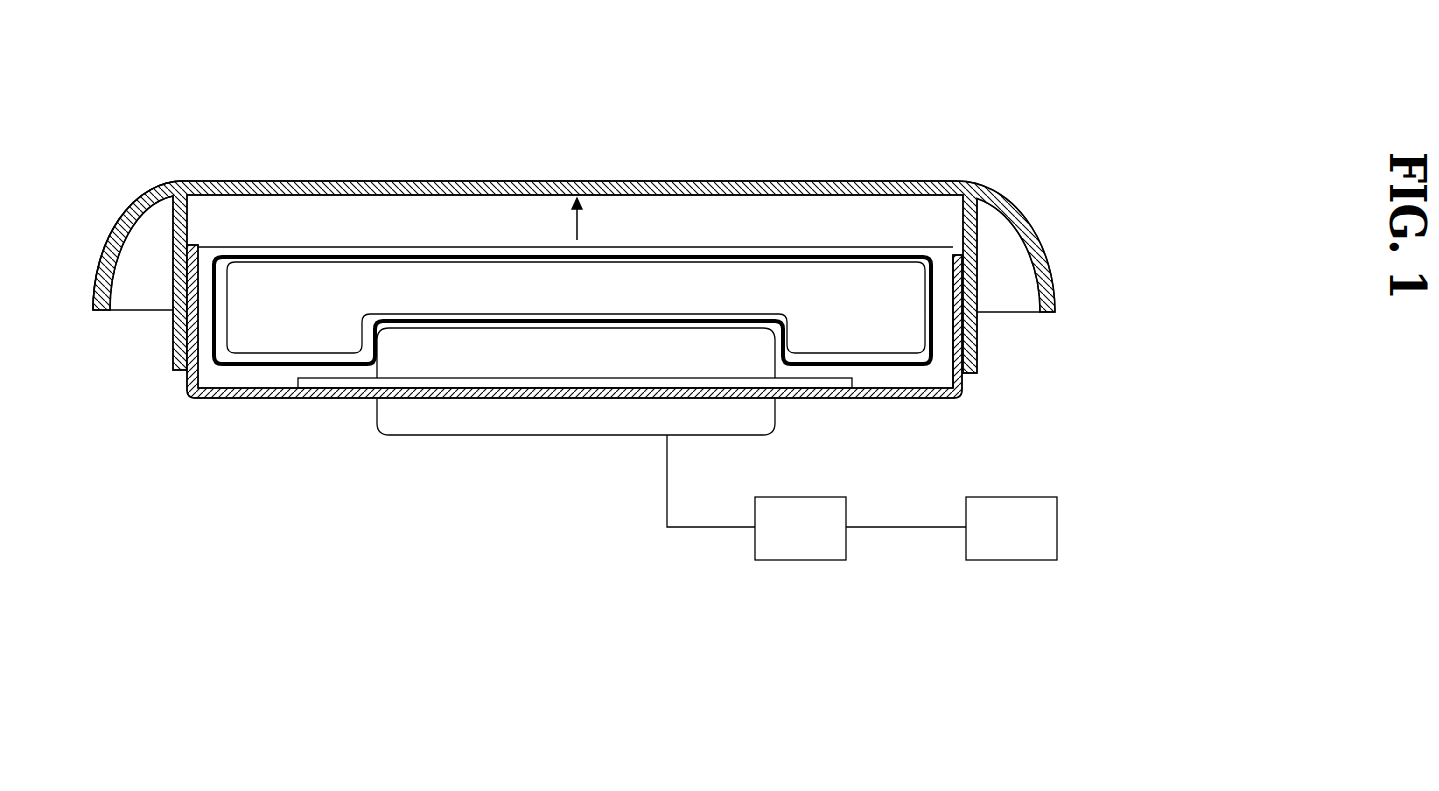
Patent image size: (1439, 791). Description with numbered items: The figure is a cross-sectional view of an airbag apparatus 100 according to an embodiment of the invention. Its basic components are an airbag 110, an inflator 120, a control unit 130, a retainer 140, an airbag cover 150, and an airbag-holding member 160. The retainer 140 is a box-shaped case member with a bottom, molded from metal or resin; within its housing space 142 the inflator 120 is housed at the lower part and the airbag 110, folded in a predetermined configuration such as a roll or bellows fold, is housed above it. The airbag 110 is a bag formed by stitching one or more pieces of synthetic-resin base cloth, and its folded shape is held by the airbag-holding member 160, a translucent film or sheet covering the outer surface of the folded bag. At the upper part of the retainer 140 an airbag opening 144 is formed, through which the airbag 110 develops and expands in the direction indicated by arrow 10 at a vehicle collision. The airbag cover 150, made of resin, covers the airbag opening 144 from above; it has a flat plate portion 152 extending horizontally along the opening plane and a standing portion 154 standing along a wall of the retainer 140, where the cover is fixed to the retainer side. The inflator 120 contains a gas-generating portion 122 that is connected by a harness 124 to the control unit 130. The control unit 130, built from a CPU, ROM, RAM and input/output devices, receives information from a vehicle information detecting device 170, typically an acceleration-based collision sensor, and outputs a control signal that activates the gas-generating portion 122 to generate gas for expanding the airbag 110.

The airbag apparatus 100 is at (637, 113).
The arrow 10 is at (597, 219).
The airbag 110 is at (448, 285).
The inflator 120 is at (529, 416).
The gas-generating portion 122 is at (375, 417).
The harness 124 is at (695, 532).
The control unit 130 is at (800, 560).
The retainer 140 is at (245, 398).
The housing space 142 is at (945, 333).
The airbag opening 144 is at (735, 249).
The airbag cover 150 is at (373, 181).
The flat plate portion 152 is at (260, 181).
The standing portion 154 is at (173, 332).
The airbag-holding member 160 is at (846, 252).
The vehicle information detecting device 170 is at (1012, 560).